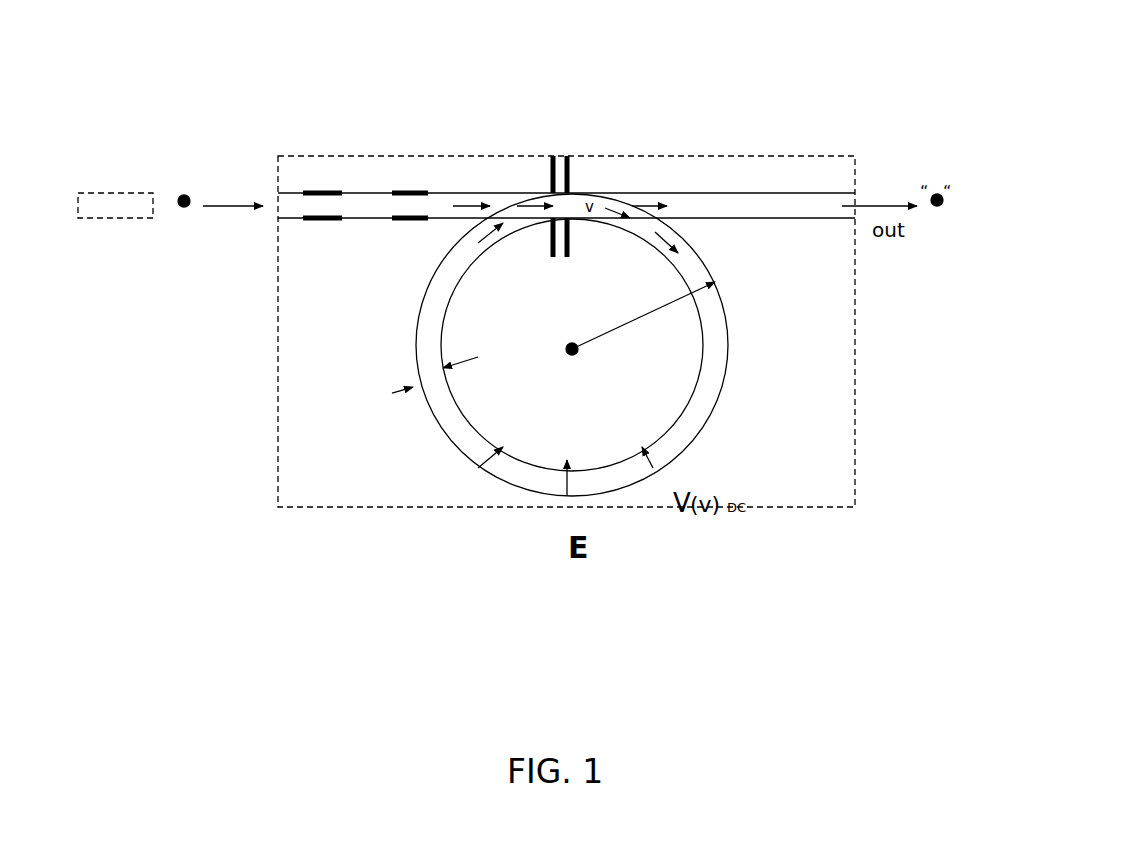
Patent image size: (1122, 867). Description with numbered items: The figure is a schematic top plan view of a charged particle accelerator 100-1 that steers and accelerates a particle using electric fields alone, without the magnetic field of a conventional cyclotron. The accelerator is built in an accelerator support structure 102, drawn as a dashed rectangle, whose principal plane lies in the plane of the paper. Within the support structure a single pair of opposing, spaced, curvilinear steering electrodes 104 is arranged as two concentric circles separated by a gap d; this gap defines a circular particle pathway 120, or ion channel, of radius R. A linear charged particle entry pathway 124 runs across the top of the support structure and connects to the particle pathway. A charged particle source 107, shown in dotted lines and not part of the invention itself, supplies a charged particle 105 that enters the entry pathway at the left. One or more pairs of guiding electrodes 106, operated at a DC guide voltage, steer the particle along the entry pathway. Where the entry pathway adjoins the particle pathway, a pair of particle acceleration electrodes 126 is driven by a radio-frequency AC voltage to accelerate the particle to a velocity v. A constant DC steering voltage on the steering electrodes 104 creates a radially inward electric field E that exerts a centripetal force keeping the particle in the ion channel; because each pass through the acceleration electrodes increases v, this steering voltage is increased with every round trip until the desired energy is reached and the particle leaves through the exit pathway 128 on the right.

The charged particle accelerator 100-1 is at (933, 80).
The accelerator support structure 102 is at (843, 382).
The curvilinear steering electrodes 104 is at (707, 343).
The charged particle 105 is at (178, 207).
The guiding electrodes 106 is at (390, 222).
The charged particle source 107 is at (115, 207).
The particle pathway 120 is at (705, 382).
The charged particle entry pathway 124 is at (378, 207).
The particle acceleration electrodes 126 is at (547, 155).
The exit pathway 128 is at (805, 207).